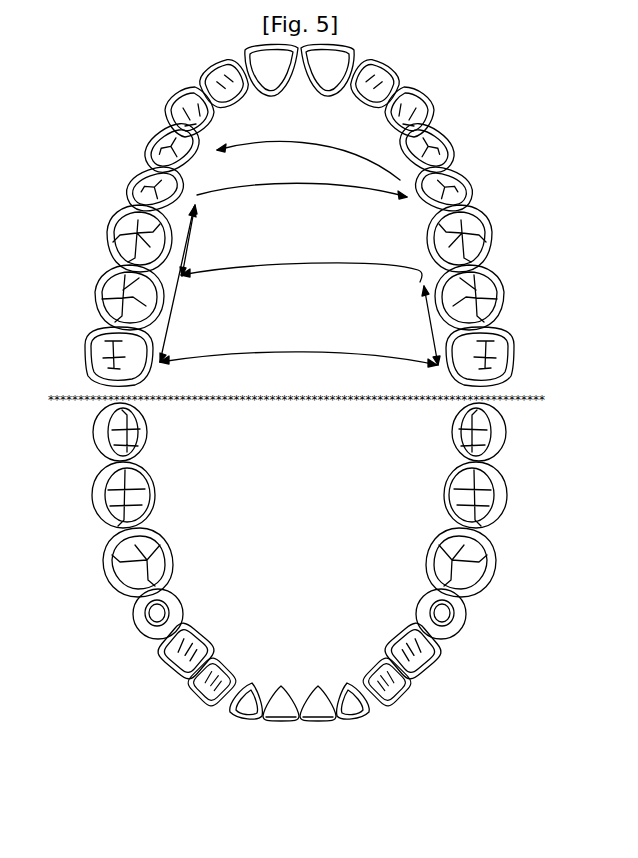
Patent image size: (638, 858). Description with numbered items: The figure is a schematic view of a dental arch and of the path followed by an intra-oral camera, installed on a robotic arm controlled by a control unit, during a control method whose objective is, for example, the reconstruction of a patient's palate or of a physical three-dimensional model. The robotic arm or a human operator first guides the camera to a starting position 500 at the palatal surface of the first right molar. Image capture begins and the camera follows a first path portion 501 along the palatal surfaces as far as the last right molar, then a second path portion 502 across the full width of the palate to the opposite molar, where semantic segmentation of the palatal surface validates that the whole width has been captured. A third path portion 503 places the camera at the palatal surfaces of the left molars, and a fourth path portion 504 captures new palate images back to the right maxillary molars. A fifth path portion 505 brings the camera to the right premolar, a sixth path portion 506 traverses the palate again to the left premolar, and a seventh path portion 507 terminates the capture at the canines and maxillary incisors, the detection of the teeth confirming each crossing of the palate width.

The starting position 500 is at (175, 242).
The first path portion 501 is at (187, 284).
The second path portion 502 is at (298, 346).
The third path portion 503 is at (407, 325).
The fourth path portion 504 is at (301, 259).
The fifth path portion 505 is at (207, 240).
The sixth path portion 506 is at (302, 198).
The seventh path portion 507 is at (308, 146).